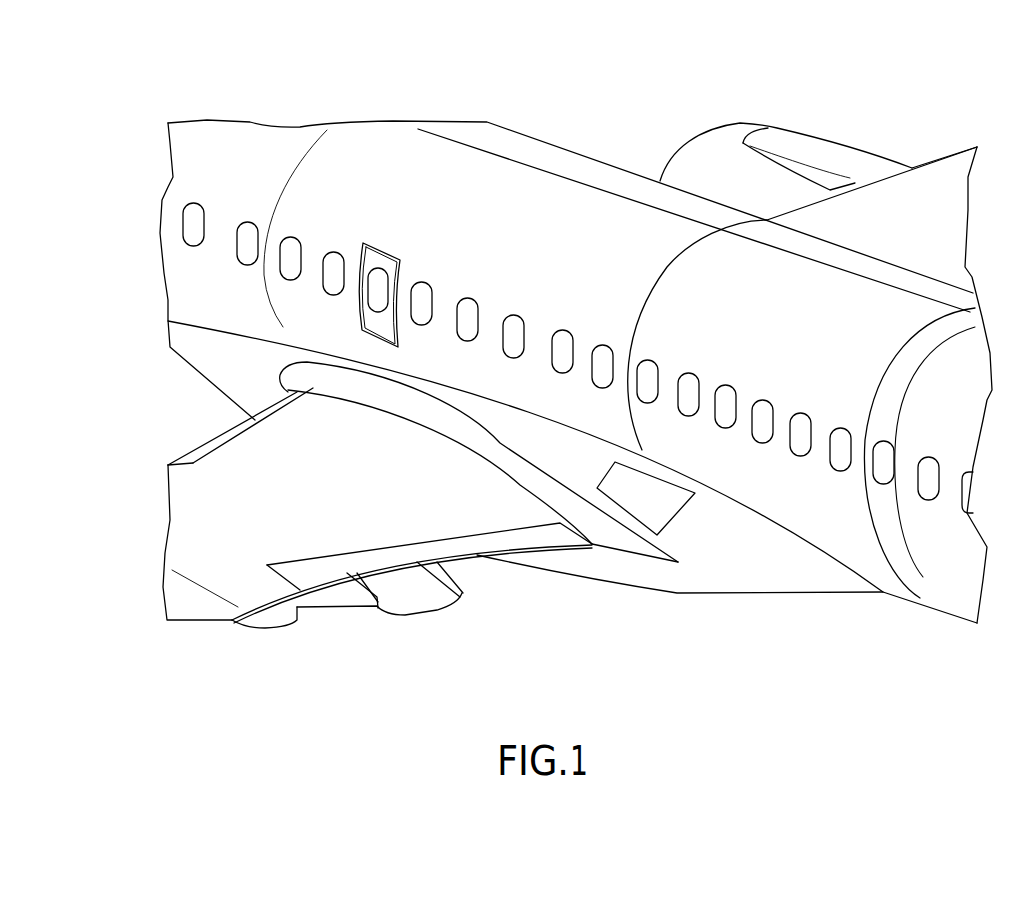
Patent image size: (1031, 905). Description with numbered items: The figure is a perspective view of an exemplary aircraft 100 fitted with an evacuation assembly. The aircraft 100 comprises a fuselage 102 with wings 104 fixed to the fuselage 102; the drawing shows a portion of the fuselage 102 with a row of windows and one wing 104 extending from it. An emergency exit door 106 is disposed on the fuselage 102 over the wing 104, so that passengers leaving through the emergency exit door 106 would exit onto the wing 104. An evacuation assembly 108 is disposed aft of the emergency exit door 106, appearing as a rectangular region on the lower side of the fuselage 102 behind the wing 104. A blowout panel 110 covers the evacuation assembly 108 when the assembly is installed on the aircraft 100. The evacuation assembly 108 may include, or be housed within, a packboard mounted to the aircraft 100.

The aircraft 100 is at (118, 118).
The fuselage 102 is at (190, 285).
The wing 104 is at (367, 483).
The emergency exit door 106 is at (372, 243).
The evacuation assembly 108 is at (678, 518).
The blowout panel 110 is at (660, 515).